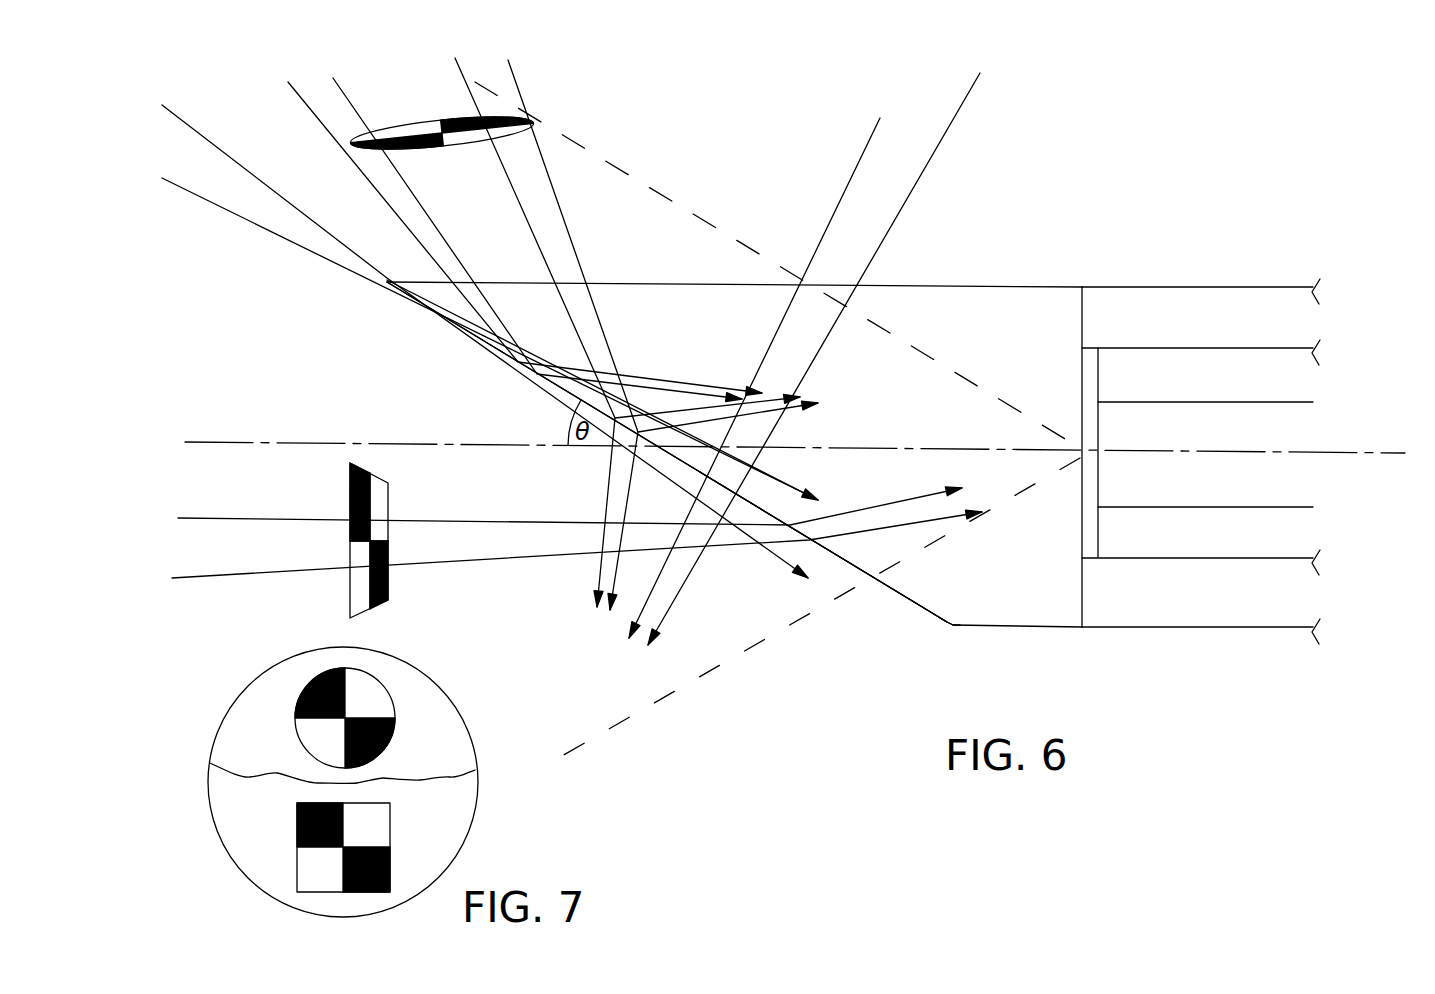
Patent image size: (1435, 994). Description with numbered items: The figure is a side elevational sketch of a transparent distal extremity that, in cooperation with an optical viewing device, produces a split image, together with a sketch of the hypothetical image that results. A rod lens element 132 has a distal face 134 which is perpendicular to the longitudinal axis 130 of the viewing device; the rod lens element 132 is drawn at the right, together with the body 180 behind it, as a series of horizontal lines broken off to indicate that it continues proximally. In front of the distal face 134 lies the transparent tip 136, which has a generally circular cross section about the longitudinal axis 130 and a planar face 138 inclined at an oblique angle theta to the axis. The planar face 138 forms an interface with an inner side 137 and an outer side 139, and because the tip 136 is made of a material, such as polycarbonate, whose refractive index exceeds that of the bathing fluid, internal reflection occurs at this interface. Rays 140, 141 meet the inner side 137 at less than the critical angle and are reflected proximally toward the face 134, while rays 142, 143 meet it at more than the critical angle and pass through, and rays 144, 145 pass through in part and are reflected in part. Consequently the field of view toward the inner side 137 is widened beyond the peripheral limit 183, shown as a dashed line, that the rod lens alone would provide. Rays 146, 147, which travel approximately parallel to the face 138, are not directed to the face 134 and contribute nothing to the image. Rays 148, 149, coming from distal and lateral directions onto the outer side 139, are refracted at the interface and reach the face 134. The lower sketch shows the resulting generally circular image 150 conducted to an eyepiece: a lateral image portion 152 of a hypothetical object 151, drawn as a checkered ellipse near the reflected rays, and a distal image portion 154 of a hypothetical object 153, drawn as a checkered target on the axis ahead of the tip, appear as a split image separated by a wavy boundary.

In FIG. 6, the longitudinal axis 130 is at (232, 442).
In FIG. 6, the rod lens element 132 is at (1183, 348).
In FIG. 6, the distal face 134 is at (1080, 553).
In FIG. 6, the transparent tip 136 is at (912, 283).
In FIG. 6, the inner side 137 is at (945, 620).
In FIG. 6, the planar face 138 is at (913, 603).
In FIG. 6, the outer side 139 is at (885, 582).
In FIG. 6, the ray 140 is at (387, 197).
In FIG. 6, the ray 141 is at (427, 213).
In FIG. 6, the ray 142 is at (871, 141).
In FIG. 6, the ray 143 is at (907, 198).
In FIG. 6, the ray 144 is at (474, 105).
In FIG. 6, the ray 145 is at (518, 80).
In FIG. 6, the ray 146 is at (198, 130).
In FIG. 6, the ray 147 is at (195, 197).
In FIG. 6, the ray 148 is at (232, 518).
In FIG. 6, the ray 149 is at (215, 578).
In FIG. 7, the generally circular image 150 is at (490, 820).
In FIG. 6, the hypothetical object 151 is at (413, 122).
In FIG. 7, the lateral image portion 152 is at (299, 698).
In FIG. 6, the hypothetical object 153 is at (358, 470).
In FIG. 7, the distal image portion 154 is at (297, 827).
In FIG. 6, the second prism 180 is at (1110, 287).
In FIG. 6, the peripheral limit 183 is at (658, 190).